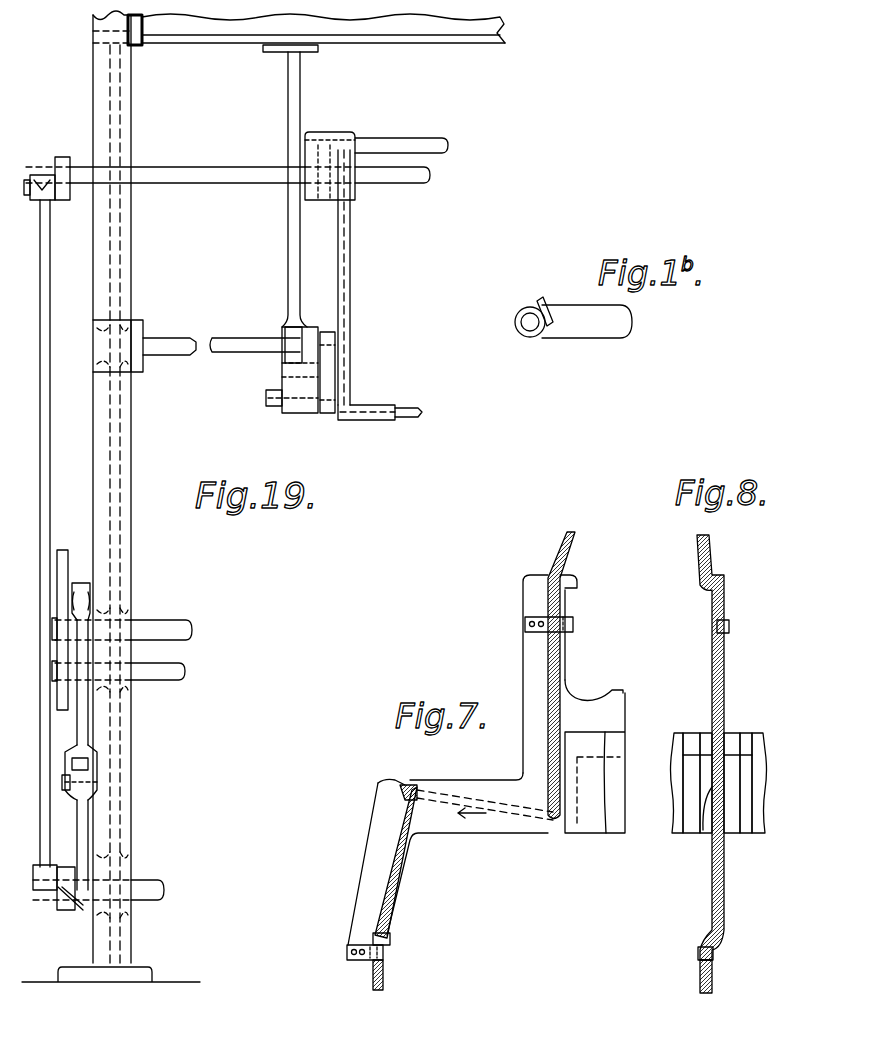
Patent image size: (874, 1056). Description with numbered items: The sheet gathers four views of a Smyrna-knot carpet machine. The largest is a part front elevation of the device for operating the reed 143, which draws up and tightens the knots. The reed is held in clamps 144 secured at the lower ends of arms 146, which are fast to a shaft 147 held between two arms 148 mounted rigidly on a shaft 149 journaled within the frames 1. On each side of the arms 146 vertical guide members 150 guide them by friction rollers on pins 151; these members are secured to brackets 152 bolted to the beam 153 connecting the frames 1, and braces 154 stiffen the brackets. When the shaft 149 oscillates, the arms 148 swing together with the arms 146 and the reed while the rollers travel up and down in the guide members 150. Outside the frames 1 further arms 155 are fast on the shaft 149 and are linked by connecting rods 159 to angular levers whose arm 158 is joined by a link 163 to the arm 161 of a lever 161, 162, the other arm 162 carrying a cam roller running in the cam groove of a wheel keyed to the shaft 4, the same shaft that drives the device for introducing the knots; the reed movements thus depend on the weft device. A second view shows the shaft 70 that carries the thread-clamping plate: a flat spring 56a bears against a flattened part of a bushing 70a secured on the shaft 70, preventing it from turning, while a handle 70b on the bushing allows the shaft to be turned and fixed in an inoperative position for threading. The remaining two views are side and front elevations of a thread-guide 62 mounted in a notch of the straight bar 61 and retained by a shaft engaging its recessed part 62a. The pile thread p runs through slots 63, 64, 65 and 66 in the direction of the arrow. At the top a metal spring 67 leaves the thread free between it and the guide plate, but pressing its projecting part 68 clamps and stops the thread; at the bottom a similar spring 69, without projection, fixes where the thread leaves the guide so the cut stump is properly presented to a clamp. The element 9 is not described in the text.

In FIG. 19, the frame 1 is at (131, 553).
In FIG. 19, the shaft 4 is at (176, 630).
In FIG. 19, the plate 9 is at (64, 568).
In FIG. 19, the reed 143 is at (408, 420).
In FIG. 19, the clamp 144 is at (340, 420).
In FIG. 19, the arm 146 is at (351, 230).
In FIG. 19, the shaft 147 is at (378, 140).
In FIG. 19, the arm 148 is at (308, 165).
In FIG. 19, the shaft 149 is at (166, 174).
In FIG. 19, the vertical guide member 150 is at (285, 376).
In FIG. 19, the pin 151 is at (325, 335).
In FIG. 19, the bracket 152 is at (298, 92).
In FIG. 19, the beam 153 is at (403, 30).
In FIG. 19, the brace 154 is at (164, 338).
In FIG. 19, the arm 155 is at (62, 158).
In FIG. 19, the arm of angular lever 158 is at (82, 848).
In FIG. 19, the connecting rod 159 is at (45, 527).
In FIG. 19, the lever arm 161 is at (80, 728).
In FIG. 19, the lever arm 162 is at (84, 590).
In FIG. 19, the link 163 is at (80, 775).
In FIG. 1B, the flat spring 56a is at (546, 297).
In FIG. 1B, the shaft 70 is at (540, 330).
In FIG. 1B, the bushing 70a is at (522, 335).
In FIG. 1B, the handle 70b is at (620, 318).
In FIG. 7, the straight bar 61 is at (607, 833).
In FIG. 8, the straight bar 61 is at (755, 735).
In FIG. 7, the thread-guide 62 is at (520, 760).
In FIG. 7, the recessed part 62a is at (597, 697).
In FIG. 7, the slot 63 is at (572, 590).
In FIG. 7, the slot 64 is at (558, 830).
In FIG. 7, the slot 65 is at (402, 785).
In FIG. 7, the slot 66 is at (392, 936).
In FIG. 7, the metal spring 67 is at (532, 630).
In FIG. 8, the metal spring 67 is at (733, 618).
In FIG. 7, the projecting part 68 is at (573, 632).
In FIG. 7, the metal spring 69 is at (355, 960).
In FIG. 8, the metal spring 69 is at (697, 954).
In FIG. 7, the pile thread p is at (398, 880).
In FIG. 8, the pile thread p is at (726, 882).